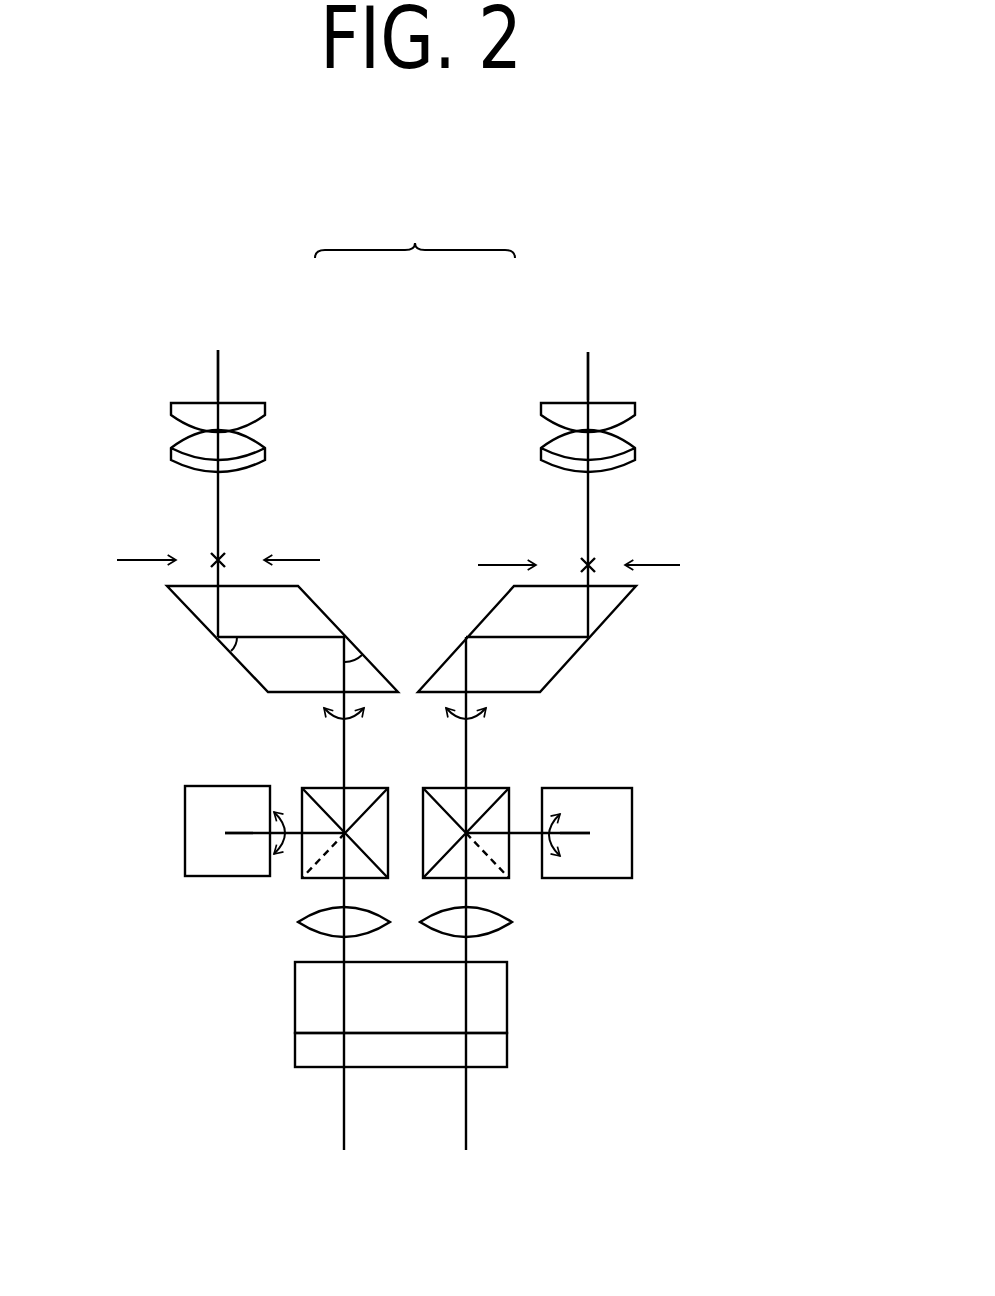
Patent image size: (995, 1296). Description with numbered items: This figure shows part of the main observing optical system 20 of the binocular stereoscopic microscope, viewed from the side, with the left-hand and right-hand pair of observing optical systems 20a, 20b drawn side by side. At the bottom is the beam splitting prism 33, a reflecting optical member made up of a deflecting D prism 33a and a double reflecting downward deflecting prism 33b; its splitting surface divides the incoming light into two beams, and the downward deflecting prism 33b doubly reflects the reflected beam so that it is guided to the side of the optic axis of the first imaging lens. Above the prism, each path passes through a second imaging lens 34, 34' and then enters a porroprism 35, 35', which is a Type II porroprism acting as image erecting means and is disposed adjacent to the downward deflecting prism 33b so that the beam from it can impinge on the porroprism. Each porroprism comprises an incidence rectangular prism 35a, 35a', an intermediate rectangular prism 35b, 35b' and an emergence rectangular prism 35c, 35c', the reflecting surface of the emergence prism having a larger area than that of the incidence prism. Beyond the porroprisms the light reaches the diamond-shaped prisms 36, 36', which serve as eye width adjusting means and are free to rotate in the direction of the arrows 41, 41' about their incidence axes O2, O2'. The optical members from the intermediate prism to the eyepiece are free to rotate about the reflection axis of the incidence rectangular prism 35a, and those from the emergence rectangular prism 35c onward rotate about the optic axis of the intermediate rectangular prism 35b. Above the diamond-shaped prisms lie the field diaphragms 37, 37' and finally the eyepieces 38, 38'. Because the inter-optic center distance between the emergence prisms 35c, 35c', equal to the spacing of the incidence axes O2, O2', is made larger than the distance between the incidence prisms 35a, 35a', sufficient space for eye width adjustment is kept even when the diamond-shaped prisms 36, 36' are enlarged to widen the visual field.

The main observing optical system 20 is at (415, 230).
The observing optical system 20a is at (232, 372).
The observing optical system 20b is at (570, 351).
The eyepiece 38 is at (174, 431).
The eyepiece 38' is at (630, 436).
The field diaphragm 37 is at (202, 527).
The field diaphragm 37' is at (604, 535).
The diamond-shaped prism 36 is at (263, 639).
The diamond-shaped prism 36' is at (555, 639).
The incidence axis O2 is at (320, 620).
The incidence axis O2' is at (551, 676).
The arrow 41 is at (354, 743).
The arrow 41' is at (449, 743).
The porroprism 35 is at (220, 819).
The porroprism 35' is at (626, 816).
The incidence rectangular prism 35a is at (286, 860).
The incidence rectangular prism 35a' is at (529, 861).
The intermediate rectangular prism 35b is at (185, 831).
The intermediate rectangular prism 35b' is at (632, 833).
The emergence rectangular prism 35c is at (285, 783).
The emergence rectangular prism 35c' is at (528, 783).
The second imaging lens 34 is at (315, 940).
The second imaging lens 34' is at (513, 941).
The beam splitting prism 33 is at (496, 1022).
The D prism 33a is at (507, 1002).
The downward deflecting prism 33b is at (507, 1048).